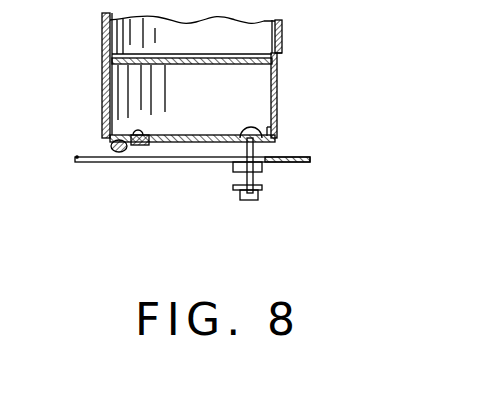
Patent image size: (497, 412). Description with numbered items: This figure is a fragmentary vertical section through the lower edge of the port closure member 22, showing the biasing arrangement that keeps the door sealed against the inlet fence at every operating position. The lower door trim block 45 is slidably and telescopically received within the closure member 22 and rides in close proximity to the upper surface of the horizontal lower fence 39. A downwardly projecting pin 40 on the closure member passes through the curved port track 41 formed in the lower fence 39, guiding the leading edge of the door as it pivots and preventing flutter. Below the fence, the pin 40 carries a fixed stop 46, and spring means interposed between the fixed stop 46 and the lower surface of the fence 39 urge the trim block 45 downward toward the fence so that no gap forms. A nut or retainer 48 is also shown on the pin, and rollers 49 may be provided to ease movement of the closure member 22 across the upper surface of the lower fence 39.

The port closure member 22 is at (283, 32).
The lower door trim block 45 is at (278, 113).
The pin 40 is at (227, 136).
The port track 41 is at (162, 163).
The lower fence 39 is at (300, 152).
The rollers 49 is at (118, 152).
The nut 48 is at (258, 178).
The fixed stop 46 is at (240, 200).